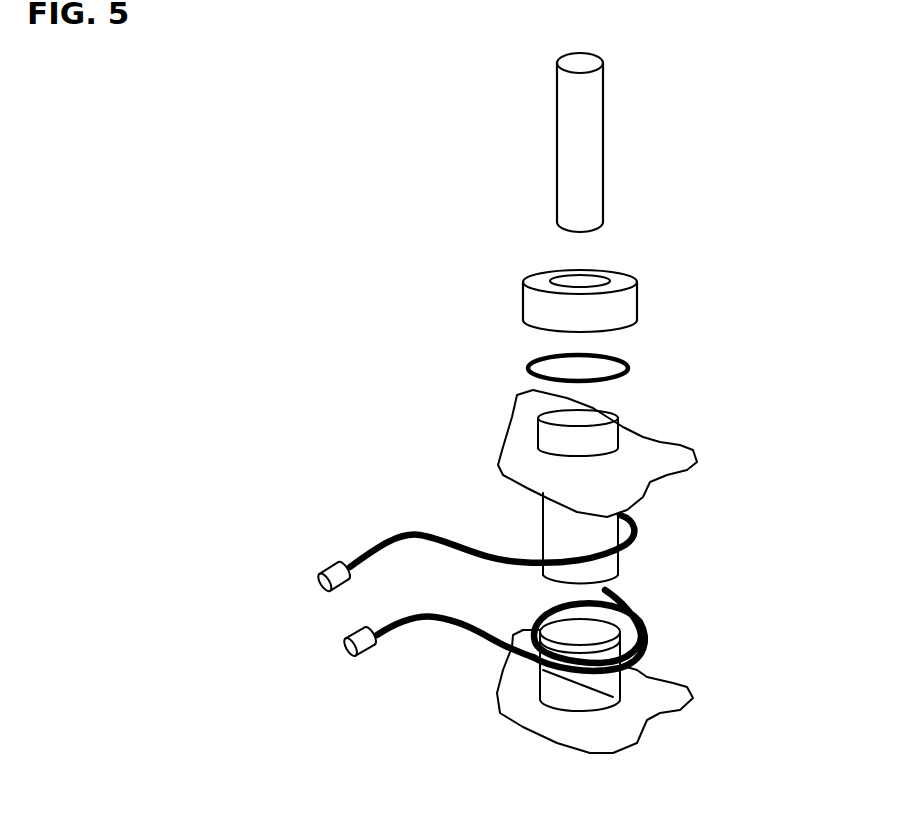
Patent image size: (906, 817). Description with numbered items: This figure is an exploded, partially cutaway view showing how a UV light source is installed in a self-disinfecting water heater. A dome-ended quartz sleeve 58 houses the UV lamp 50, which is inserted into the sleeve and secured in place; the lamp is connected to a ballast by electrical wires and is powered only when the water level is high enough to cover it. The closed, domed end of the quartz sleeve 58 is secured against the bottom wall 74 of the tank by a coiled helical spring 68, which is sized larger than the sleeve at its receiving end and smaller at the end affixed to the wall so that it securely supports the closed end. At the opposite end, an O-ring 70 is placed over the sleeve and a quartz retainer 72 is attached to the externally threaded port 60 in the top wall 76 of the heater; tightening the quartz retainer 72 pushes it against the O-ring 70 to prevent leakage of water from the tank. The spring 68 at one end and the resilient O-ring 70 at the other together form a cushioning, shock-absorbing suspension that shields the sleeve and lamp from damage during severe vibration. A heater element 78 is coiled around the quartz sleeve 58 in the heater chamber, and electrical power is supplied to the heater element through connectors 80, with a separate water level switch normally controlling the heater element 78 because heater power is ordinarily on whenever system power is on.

The UV lamp 50 is at (605, 148).
The quartz retainer 72 is at (640, 300).
The O-ring 70 is at (630, 366).
The top wall 76 is at (528, 468).
The port 60 is at (610, 442).
The quartz sleeve 58 is at (532, 522).
The connectors 80 is at (327, 595).
The heater element 78 is at (642, 623).
The spring 68 is at (563, 705).
The bottom wall 74 is at (647, 704).